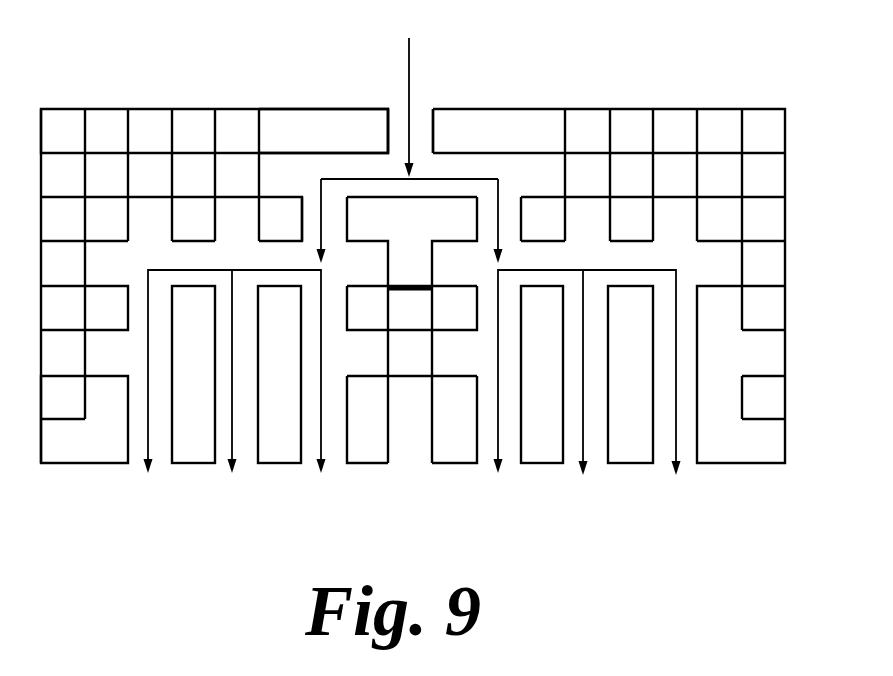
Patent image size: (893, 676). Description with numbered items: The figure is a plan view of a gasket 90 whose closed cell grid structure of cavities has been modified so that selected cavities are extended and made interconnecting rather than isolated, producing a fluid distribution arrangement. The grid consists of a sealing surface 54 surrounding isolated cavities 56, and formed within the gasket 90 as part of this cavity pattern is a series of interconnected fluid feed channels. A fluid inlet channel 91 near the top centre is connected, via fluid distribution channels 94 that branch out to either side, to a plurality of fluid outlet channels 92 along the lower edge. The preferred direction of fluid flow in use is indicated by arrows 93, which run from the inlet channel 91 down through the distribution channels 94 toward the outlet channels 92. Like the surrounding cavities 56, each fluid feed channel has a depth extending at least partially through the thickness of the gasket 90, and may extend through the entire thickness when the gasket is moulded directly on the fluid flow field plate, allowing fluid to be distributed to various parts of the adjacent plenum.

The gasket 90 is at (594, 92).
The fluid inlet channel 91 is at (418, 120).
The fluid outlet channels 92 is at (162, 448).
The arrows 93 is at (409, 62).
The fluid distribution channels 94 is at (165, 259).
The sealing surface 54 is at (288, 120).
The isolated cavities 56 is at (148, 125).